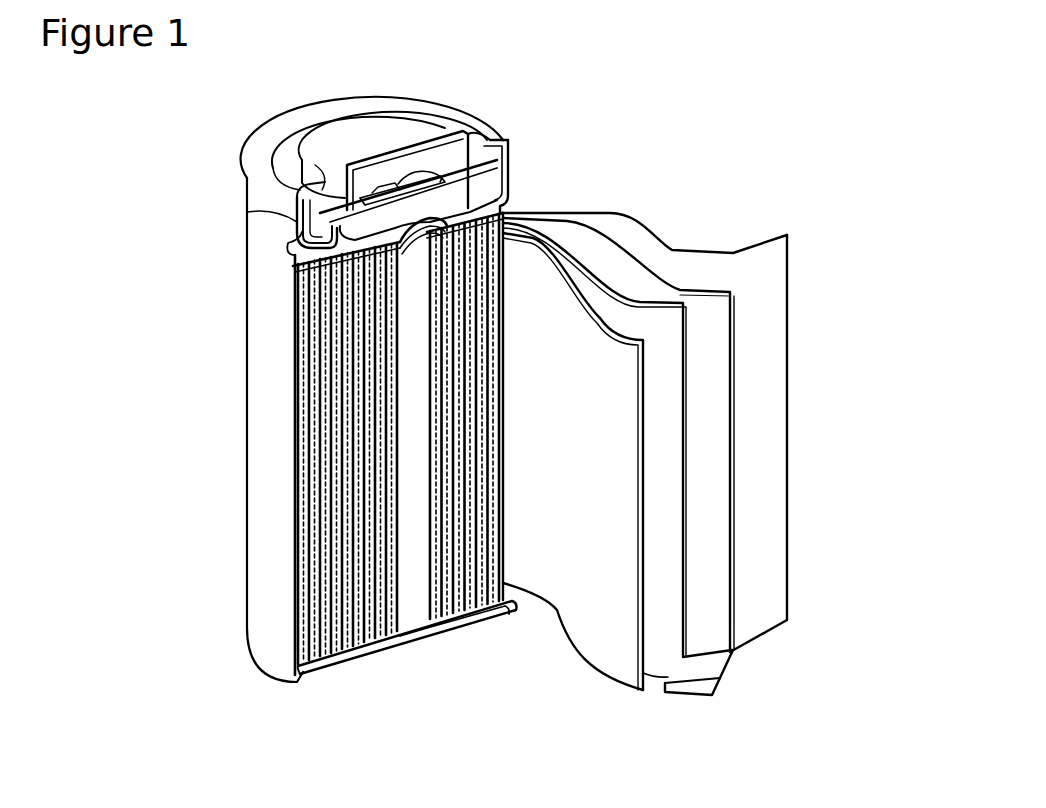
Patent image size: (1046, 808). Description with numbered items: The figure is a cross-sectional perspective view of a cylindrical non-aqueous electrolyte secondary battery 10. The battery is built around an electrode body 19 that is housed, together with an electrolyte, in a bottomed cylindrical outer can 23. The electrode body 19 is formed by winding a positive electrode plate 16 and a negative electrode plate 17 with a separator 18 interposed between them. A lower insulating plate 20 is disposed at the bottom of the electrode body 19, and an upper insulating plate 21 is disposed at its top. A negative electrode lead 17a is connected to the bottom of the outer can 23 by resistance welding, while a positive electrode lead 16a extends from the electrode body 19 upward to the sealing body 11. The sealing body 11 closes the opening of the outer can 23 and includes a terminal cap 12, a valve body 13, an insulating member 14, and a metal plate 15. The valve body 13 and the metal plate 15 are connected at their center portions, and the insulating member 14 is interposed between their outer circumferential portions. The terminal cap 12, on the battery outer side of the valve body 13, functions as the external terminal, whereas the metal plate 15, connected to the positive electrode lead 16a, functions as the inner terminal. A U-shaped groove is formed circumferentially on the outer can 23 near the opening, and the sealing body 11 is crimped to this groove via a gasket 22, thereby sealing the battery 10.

The non-aqueous electrolyte secondary battery 10 is at (207, 101).
The sealing body 11 is at (630, 62).
The terminal cap 12 is at (398, 131).
The valve body 13 is at (437, 160).
The insulating member 14 is at (438, 182).
The metal plate 15 is at (458, 203).
The positive electrode plate 16 is at (618, 390).
The positive electrode lead 16a is at (313, 243).
The negative electrode plate 17 is at (697, 453).
The negative electrode lead 17a is at (700, 673).
The separator 18 is at (608, 308).
The electrode body 19 is at (305, 447).
The lower insulating plate 20 is at (363, 642).
The upper insulating plate 21 is at (302, 268).
The gasket 22 is at (302, 217).
The outer can 23 is at (263, 398).